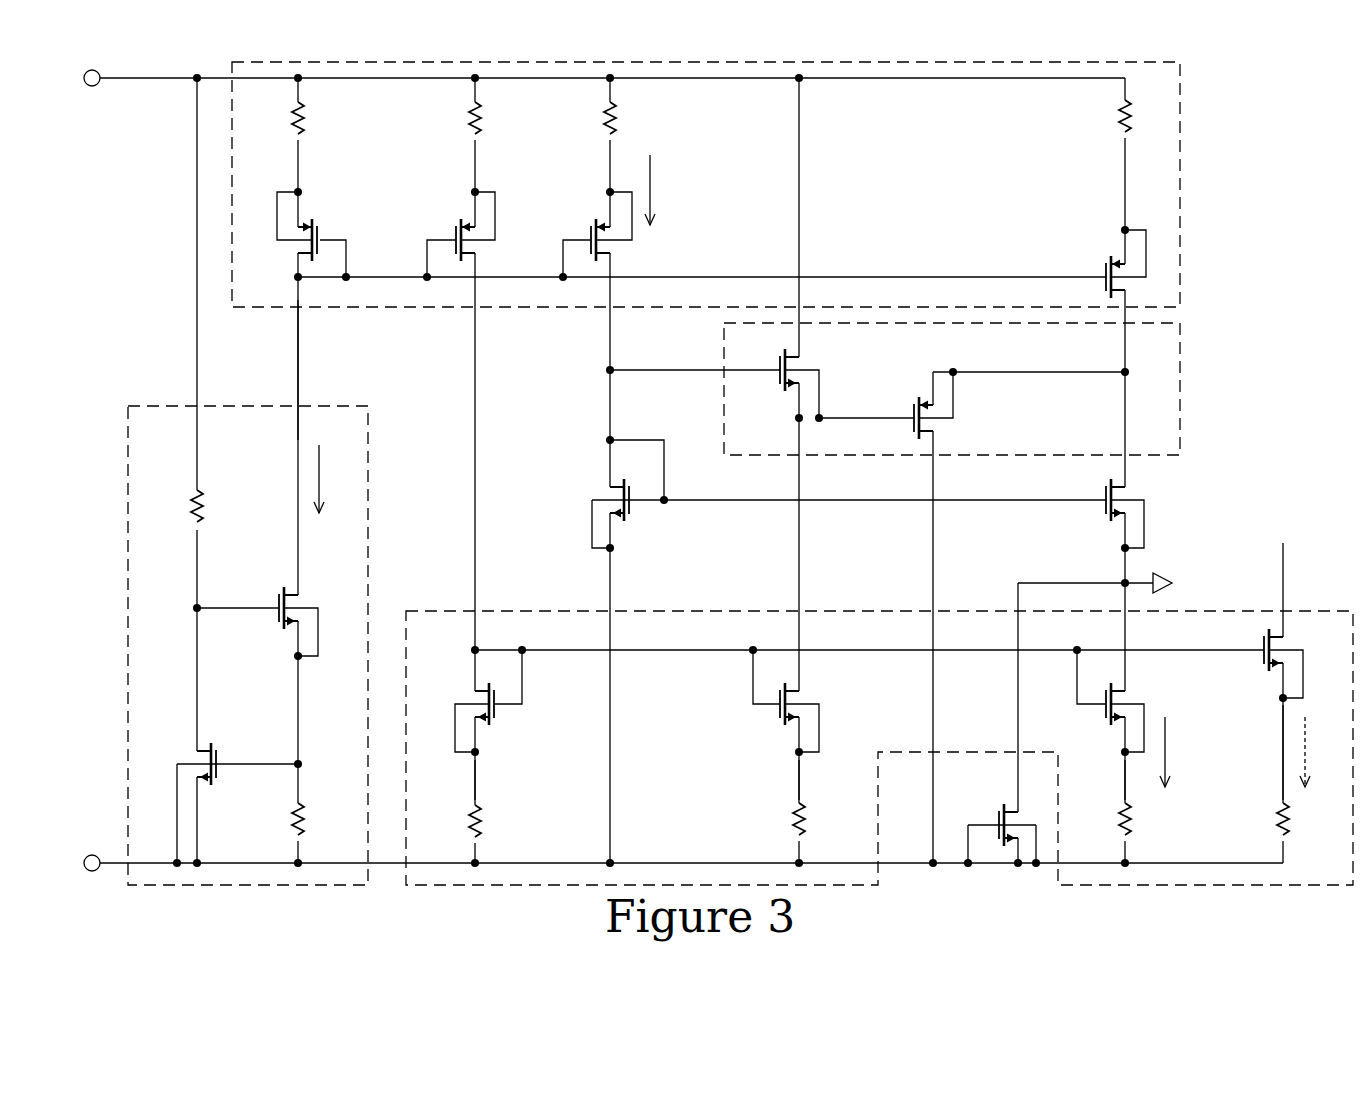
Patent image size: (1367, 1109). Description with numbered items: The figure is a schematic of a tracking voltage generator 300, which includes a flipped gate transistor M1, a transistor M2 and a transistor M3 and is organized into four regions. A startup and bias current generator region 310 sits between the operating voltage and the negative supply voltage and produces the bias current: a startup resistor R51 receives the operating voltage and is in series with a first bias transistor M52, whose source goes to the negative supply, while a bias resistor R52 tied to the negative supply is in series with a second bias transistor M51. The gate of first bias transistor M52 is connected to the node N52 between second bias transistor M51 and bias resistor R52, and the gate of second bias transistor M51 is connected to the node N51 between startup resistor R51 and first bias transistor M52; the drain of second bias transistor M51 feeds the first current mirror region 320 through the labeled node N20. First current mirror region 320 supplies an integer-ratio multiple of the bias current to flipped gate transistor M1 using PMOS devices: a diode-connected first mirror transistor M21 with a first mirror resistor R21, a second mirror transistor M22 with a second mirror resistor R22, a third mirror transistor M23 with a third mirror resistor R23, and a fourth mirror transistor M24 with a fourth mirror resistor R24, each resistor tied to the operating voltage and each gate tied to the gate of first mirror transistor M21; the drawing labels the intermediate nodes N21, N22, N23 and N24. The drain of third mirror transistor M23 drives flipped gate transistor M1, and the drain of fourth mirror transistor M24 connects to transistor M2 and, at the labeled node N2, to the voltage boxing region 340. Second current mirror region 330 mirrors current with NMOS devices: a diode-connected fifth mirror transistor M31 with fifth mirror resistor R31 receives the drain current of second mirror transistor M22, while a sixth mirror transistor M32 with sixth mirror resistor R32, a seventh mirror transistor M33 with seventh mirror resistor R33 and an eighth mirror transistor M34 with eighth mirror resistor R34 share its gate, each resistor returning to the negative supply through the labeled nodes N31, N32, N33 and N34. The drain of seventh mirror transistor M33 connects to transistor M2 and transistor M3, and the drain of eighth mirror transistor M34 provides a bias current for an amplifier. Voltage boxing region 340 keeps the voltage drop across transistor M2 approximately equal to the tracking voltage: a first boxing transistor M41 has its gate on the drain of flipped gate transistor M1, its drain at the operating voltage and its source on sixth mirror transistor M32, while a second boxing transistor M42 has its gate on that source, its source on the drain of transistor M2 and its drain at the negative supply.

The tracking voltage generator 300 is at (1317, 90).
The startup and bias current generator region 310 is at (127, 648).
The first current mirror region 320 is at (1181, 183).
The second current mirror region 330 is at (432, 611).
The voltage boxing region 340 is at (1181, 386).
The flipped gate transistor M1 is at (613, 494).
The transistor M2 is at (1140, 509).
The transistor M3 is at (996, 824).
The first mirror transistor M21 is at (326, 236).
The second mirror transistor M22 is at (450, 236).
The third mirror transistor M23 is at (586, 236).
The fourth mirror transistor M24 is at (1099, 264).
The fifth mirror transistor M31 is at (471, 703).
The sixth mirror transistor M32 is at (807, 703).
The seventh mirror transistor M33 is at (1132, 703).
The eighth mirror transistor M34 is at (1305, 658).
The first boxing transistor M41 is at (820, 376).
The second boxing transistor M42 is at (907, 405).
The second bias transistor M51 is at (321, 613).
The first bias transistor M52 is at (179, 796).
The first mirror resistor R21 is at (324, 120).
The second mirror resistor R22 is at (448, 120).
The third mirror resistor R23 is at (583, 120).
The fourth mirror resistor R24 is at (1098, 119).
The fifth mirror resistor R31 is at (501, 823).
The sixth mirror resistor R32 is at (772, 822).
The seventh mirror resistor R33 is at (1152, 822).
The eighth mirror resistor R34 is at (1311, 822).
The startup resistor R51 is at (225, 508).
The bias resistor R52 is at (272, 822).
The node N2 is at (1108, 407).
The node N20 is at (271, 375).
The node N21 is at (273, 172).
The node N22 is at (449, 172).
The node N23 is at (585, 172).
The node N24 is at (1098, 203).
The node N31 is at (447, 780).
The node N32 is at (775, 780).
The node N33 is at (1099, 780).
The node N34 is at (1258, 752).
The node N51 is at (229, 594).
The node N52 is at (268, 751).